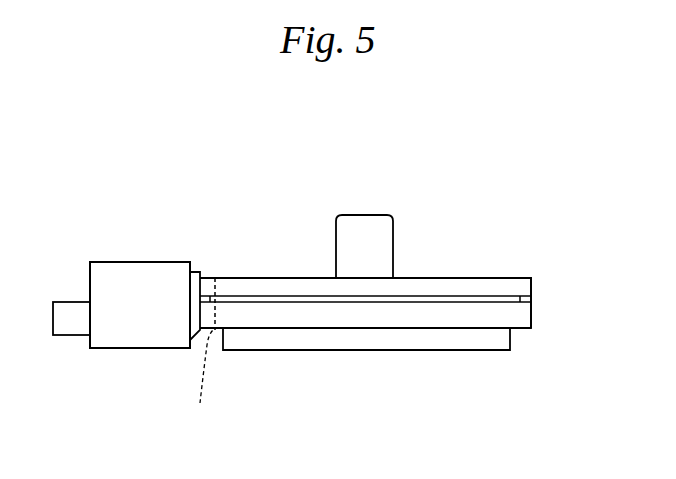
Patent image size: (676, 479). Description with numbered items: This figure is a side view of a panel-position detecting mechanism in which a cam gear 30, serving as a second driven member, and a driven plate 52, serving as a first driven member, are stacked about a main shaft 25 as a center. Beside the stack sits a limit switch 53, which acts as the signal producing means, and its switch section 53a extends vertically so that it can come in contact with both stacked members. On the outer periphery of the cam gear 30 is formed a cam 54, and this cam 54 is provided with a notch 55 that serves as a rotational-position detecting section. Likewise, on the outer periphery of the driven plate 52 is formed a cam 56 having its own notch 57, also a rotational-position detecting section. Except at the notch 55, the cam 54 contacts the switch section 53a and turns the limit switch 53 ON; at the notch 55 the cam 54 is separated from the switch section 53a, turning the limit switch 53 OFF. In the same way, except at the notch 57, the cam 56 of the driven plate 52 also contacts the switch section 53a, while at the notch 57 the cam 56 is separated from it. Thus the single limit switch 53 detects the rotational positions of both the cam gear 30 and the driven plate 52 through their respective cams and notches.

The main shaft 25 is at (382, 233).
The cam gear 30 is at (522, 317).
The driven plate 52 is at (513, 285).
The limit switch 53 is at (132, 337).
The switch section 53a is at (195, 272).
The cam 54 is at (264, 327).
The notch 55 is at (202, 384).
The cam 56 is at (269, 273).
The notch 57 is at (210, 274).